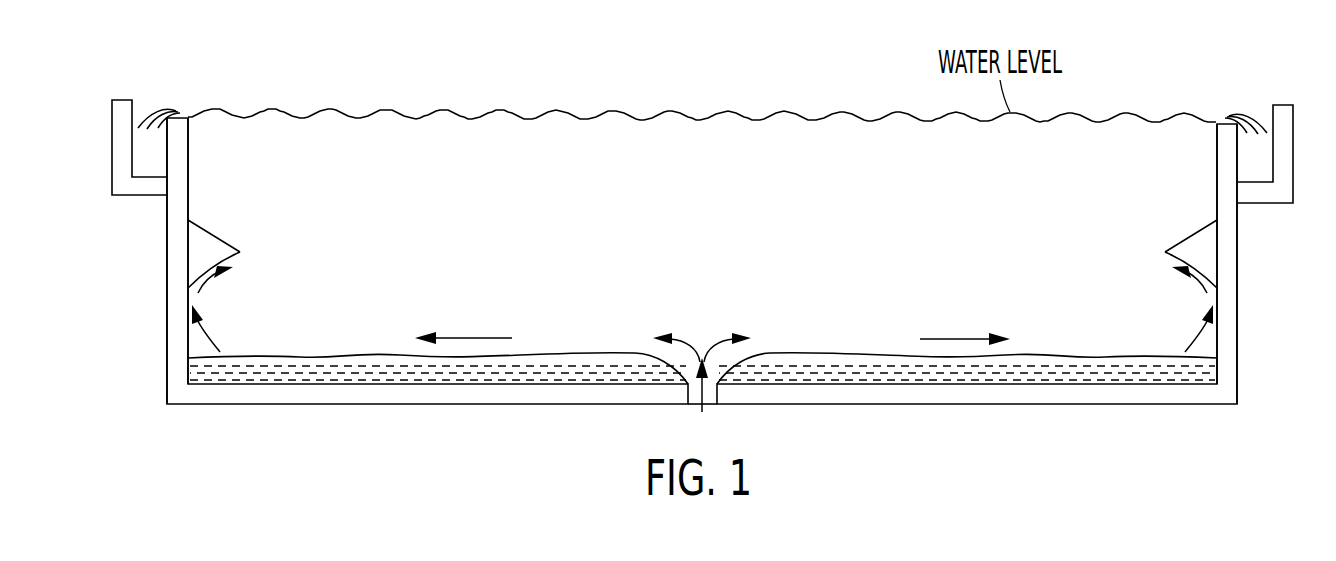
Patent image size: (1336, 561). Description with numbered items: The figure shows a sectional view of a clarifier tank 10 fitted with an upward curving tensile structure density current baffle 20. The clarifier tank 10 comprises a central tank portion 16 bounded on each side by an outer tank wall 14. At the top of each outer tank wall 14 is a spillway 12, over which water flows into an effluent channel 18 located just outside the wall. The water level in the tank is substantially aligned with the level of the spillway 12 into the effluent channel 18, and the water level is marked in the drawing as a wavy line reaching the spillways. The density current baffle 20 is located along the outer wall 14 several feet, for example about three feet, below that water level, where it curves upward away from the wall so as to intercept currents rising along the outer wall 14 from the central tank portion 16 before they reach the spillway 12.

The clarifier tank 10 is at (382, 395).
The spillway 12 is at (176, 110).
The outer tank wall 14 is at (167, 261).
The central tank portion 16 is at (713, 266).
The effluent channel 18 is at (146, 165).
The density current baffle 20 is at (240, 252).